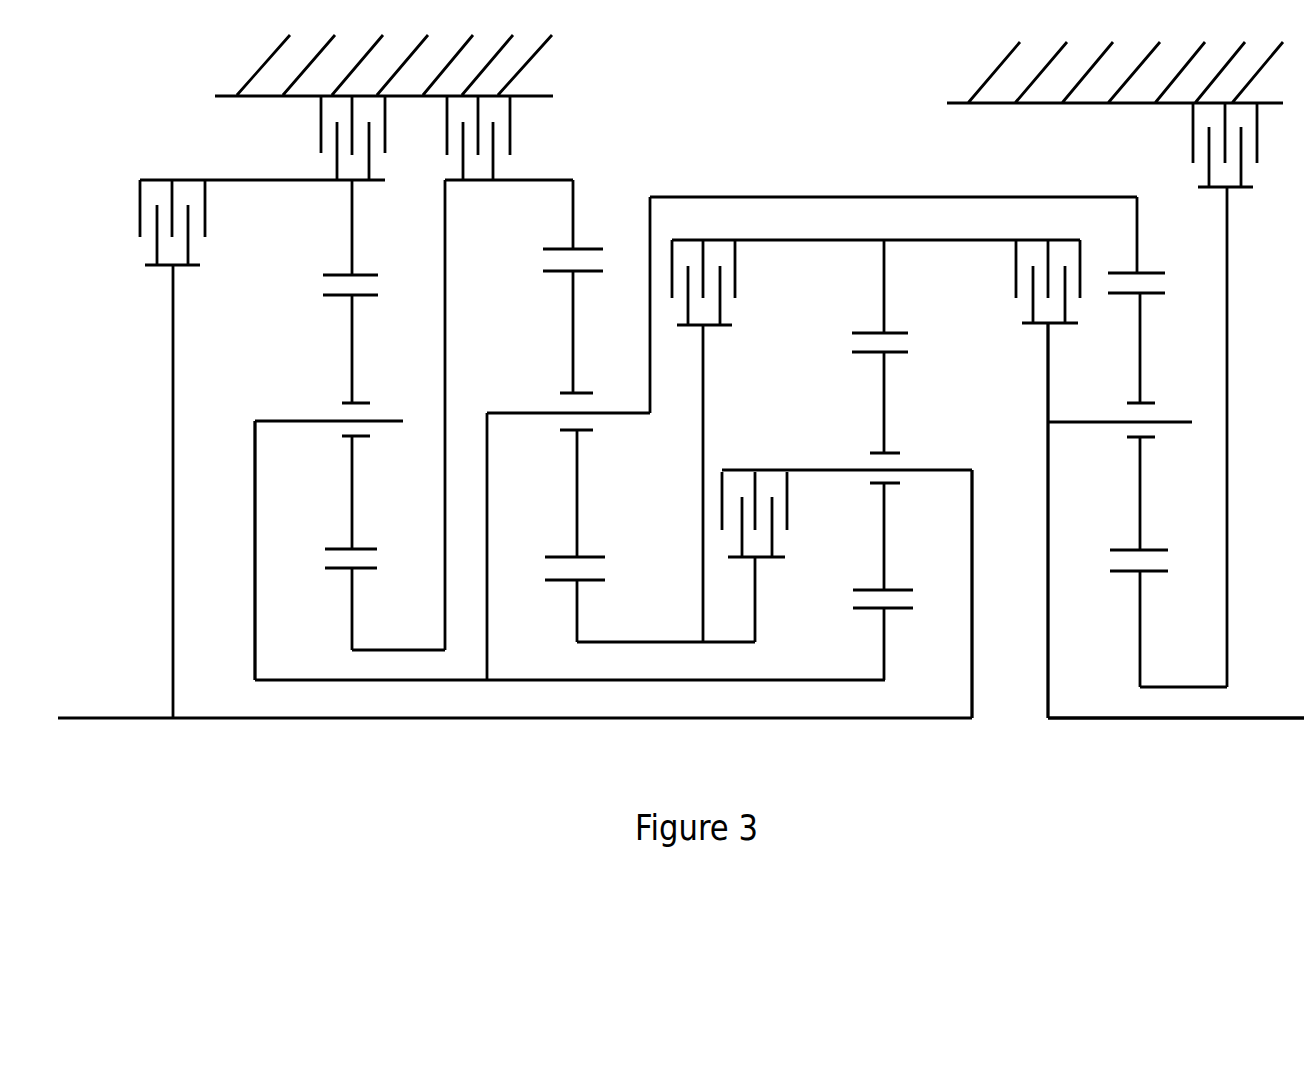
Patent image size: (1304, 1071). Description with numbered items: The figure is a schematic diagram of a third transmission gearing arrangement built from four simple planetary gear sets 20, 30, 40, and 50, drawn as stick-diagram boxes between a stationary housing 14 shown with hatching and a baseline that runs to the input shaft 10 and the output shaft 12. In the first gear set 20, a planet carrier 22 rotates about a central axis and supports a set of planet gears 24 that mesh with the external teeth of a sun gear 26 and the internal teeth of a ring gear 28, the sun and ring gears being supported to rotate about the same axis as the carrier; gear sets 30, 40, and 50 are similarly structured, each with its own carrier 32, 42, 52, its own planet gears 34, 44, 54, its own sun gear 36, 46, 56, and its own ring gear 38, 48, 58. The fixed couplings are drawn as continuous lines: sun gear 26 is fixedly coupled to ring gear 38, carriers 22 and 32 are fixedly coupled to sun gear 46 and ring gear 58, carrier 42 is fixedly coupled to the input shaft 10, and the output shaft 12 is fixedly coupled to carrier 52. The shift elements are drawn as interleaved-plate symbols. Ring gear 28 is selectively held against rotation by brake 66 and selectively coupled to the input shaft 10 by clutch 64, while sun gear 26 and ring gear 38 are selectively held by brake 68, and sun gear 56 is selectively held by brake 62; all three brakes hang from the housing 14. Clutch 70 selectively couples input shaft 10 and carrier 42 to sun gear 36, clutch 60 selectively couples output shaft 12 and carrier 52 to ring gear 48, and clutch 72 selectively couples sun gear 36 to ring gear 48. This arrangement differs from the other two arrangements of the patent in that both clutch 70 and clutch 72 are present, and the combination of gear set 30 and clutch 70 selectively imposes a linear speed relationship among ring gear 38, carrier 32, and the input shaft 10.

The input shaft 10 is at (78, 718).
The output shaft 12 is at (1280, 718).
The housing (ground) 14 is at (267, 55).
The simple planetary gear set 20 is at (570, 598).
The planet carrier 22 is at (253, 468).
The planet gears 24 is at (353, 358).
The sun gear 26 is at (353, 612).
The ring gear 28 is at (352, 222).
The simple planetary gear set 30 is at (568, 595).
The carrier 32 is at (505, 412).
The sun gear of second gear set 34 is at (575, 347).
The sun gear 36 is at (577, 603).
The ring gear 38 is at (575, 207).
The simple planetary gear set 40 is at (893, 486).
The carrier 42 is at (940, 470).
The sun gear of third gear set 44 is at (880, 407).
The sun gear 46 is at (885, 645).
The ring gear 48 is at (882, 278).
The simple planetary gear set 50 is at (1176, 549).
The carrier 52 is at (1048, 473).
The sun gear of fourth gear set 54 is at (1140, 363).
The sun gear 56 is at (1140, 612).
The ring gear 58 is at (1137, 230).
The clutch 60 is at (1063, 237).
The brake 62 is at (1192, 135).
The clutch 64 is at (140, 205).
The brake 66 is at (318, 125).
The brake 68 is at (510, 123).
The clutch 70 is at (727, 472).
The clutch 72 is at (735, 270).